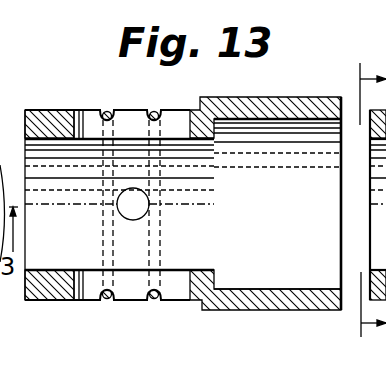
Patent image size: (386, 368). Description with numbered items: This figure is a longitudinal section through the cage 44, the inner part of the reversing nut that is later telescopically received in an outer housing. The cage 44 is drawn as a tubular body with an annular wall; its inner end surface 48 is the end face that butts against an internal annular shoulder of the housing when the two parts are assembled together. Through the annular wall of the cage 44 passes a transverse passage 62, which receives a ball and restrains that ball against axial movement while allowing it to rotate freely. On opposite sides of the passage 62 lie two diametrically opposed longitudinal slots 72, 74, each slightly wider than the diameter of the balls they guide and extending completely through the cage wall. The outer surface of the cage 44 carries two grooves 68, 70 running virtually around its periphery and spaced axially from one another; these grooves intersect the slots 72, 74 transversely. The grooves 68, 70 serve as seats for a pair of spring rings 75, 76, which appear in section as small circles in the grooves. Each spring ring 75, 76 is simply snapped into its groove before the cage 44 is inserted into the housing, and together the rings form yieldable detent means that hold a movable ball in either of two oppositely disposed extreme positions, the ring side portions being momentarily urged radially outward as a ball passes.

The cage 44 is at (249, 311).
The inner end surface 48 is at (24, 125).
The transverse passage 62 is at (133, 204).
The groove 68 is at (104, 110).
The groove 70 is at (163, 111).
The longitudinal slot 72 is at (79, 112).
The longitudinal slot 74 is at (92, 290).
The spring ring 75 is at (109, 111).
The spring ring 76 is at (155, 111).